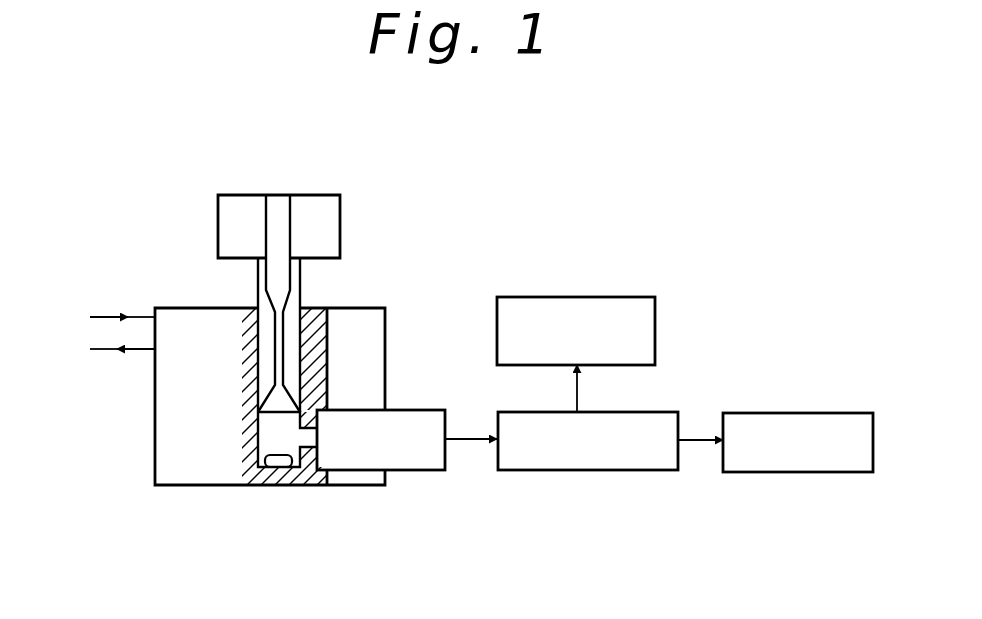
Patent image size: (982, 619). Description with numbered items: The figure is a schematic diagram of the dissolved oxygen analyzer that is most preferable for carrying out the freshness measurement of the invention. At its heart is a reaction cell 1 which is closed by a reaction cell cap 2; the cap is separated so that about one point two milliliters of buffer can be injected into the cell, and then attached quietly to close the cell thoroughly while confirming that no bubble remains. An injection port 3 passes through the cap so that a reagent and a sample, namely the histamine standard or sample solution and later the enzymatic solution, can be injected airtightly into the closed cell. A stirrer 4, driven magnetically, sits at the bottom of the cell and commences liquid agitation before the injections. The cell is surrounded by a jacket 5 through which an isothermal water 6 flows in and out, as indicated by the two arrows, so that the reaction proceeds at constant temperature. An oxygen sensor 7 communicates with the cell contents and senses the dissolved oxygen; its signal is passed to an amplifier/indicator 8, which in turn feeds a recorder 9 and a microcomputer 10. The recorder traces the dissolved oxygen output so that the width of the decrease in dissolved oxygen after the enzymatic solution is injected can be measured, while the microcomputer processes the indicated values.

The reaction cell 1 is at (264, 437).
The reaction cell cap 2 is at (330, 224).
The injection port 3 is at (284, 317).
The stirrer 4 is at (276, 468).
The jacket 5 is at (198, 315).
The isothermal water 6 is at (107, 345).
The oxygen sensor 7 is at (419, 410).
The amplifier/indicator 8 is at (553, 472).
The recorder 9 is at (783, 473).
The microcomputer 10 is at (562, 296).